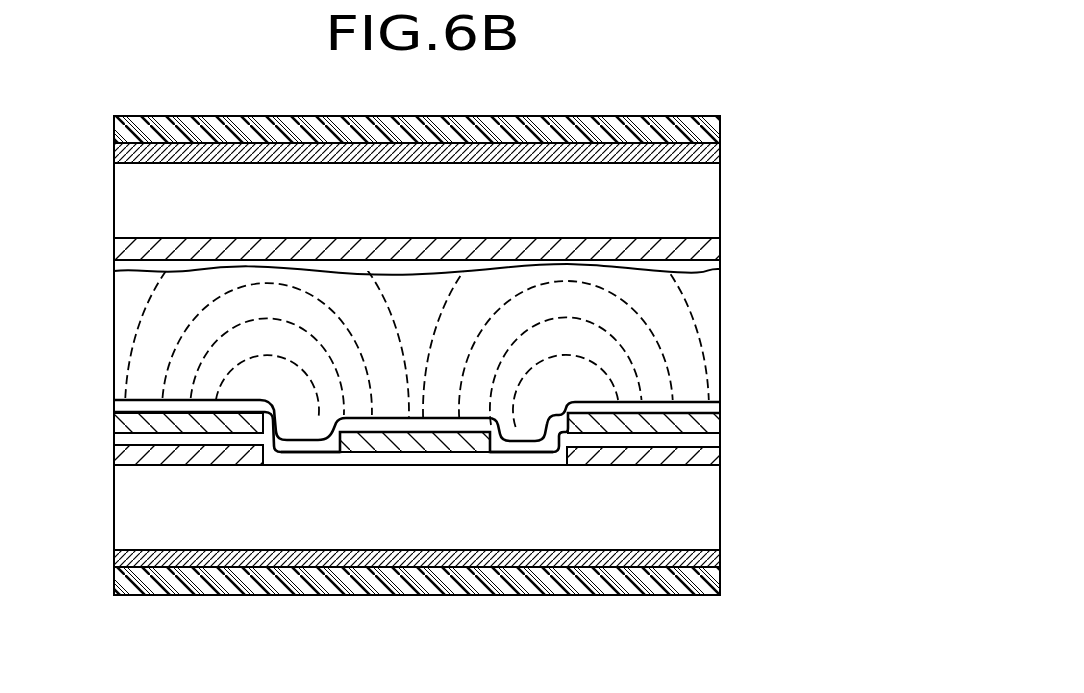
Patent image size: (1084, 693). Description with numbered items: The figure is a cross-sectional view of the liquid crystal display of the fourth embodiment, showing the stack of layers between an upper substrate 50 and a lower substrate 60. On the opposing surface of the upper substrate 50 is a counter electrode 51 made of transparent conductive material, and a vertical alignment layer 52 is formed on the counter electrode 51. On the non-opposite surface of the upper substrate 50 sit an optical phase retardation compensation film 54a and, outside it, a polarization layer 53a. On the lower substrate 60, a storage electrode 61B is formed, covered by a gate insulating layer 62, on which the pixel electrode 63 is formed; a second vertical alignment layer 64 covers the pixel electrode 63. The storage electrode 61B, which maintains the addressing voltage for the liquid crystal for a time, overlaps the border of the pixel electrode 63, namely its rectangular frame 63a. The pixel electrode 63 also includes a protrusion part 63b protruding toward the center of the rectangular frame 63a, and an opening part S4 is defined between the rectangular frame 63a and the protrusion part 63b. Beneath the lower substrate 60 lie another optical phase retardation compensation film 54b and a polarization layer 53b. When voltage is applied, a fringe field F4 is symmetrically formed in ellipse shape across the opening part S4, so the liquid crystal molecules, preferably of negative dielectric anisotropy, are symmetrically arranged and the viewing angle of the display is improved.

The upper substrate 50 is at (722, 198).
The counter electrode 51 is at (722, 246).
The vertical alignment layer 52 is at (722, 267).
The polarization layer 53a is at (722, 130).
The optical phase retardation compensation film 54a is at (722, 152).
The lower substrate 60 is at (722, 513).
The storage electrode 61B is at (722, 460).
The gate insulating layer 62 is at (722, 436).
The pixel electrode 63 is at (712, 407).
The rectangular frame 63a is at (722, 427).
The protrusion part 63b is at (413, 455).
The vertical alignment layer 64 is at (712, 400).
The polarization layer 53b is at (722, 585).
The optical phase retardation compensation film 54b is at (722, 557).
The fringe field F4 is at (417, 319).
The opening part S4 is at (530, 462).